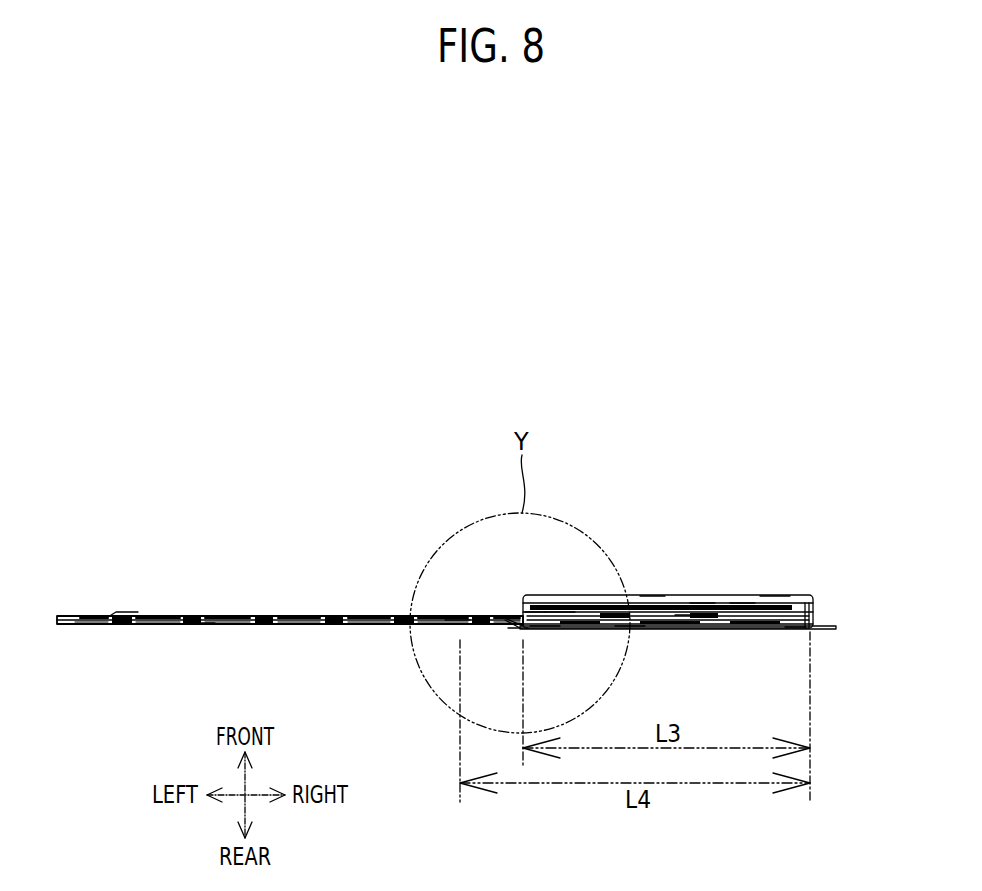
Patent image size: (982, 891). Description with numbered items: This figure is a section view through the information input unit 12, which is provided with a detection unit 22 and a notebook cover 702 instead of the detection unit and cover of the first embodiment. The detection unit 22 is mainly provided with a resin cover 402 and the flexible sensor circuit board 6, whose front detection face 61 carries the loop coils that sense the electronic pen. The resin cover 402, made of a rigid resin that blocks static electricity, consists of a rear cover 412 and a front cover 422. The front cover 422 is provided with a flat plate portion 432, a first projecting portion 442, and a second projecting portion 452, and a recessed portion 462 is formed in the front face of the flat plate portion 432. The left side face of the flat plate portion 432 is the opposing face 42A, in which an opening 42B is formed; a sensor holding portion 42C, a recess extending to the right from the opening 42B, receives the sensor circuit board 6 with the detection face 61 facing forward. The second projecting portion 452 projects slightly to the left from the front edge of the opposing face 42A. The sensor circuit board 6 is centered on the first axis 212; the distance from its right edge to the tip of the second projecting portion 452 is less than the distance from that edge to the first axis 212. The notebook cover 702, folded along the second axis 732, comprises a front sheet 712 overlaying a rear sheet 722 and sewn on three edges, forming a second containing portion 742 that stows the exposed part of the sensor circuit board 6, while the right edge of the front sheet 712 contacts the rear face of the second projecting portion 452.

The sensor circuit board 6 is at (286, 627).
The information input unit 12 is at (710, 478).
The detection unit 22 is at (771, 596).
The detection face 61 is at (308, 615).
The first axis 212 is at (484, 630).
The resin cover 402 is at (651, 596).
The rear cover 412 is at (795, 629).
The front cover 422 is at (740, 601).
The flat plate portion 432 is at (688, 616).
The first projecting portion 442 is at (700, 601).
The second projecting portion 452 is at (533, 611).
The recessed portion 462 is at (770, 607).
The notebook cover 702 is at (108, 617).
The front sheet 712 is at (222, 615).
The rear sheet 722 is at (205, 626).
The second axis 732 is at (456, 616).
The second containing portion 742 is at (517, 629).
The opposing face 42A is at (553, 611).
The opening 42B is at (540, 628).
The sensor holding portion 42C is at (630, 628).